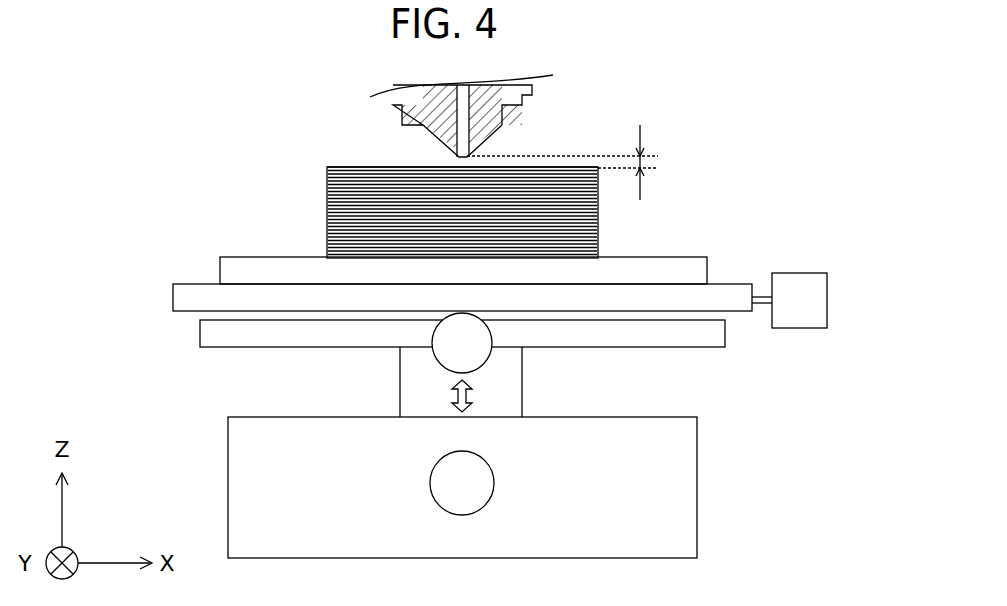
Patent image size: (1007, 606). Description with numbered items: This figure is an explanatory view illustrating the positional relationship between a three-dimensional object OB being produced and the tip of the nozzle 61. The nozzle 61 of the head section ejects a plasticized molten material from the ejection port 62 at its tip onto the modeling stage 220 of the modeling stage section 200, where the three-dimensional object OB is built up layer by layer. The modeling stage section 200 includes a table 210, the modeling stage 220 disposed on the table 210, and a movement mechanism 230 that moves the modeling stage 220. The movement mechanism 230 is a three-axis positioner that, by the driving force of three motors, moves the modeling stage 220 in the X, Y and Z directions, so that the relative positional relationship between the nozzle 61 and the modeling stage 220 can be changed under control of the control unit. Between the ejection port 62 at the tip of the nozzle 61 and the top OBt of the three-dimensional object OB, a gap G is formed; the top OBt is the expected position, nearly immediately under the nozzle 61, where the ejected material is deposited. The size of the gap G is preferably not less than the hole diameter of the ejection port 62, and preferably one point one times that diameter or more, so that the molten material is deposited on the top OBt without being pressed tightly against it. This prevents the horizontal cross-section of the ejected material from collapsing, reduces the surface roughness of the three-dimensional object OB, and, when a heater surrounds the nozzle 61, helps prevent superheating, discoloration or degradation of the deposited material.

The nozzle 61 is at (433, 140).
The ejection port 62 is at (453, 153).
The three-dimensional object OB is at (325, 205).
The top of the three-dimensional object OBt is at (527, 166).
The gap G is at (572, 162).
The modeling stage section 200 is at (502, 378).
The table 210 is at (210, 283).
The modeling stage 220 is at (645, 257).
The movement mechanism 230 is at (742, 408).